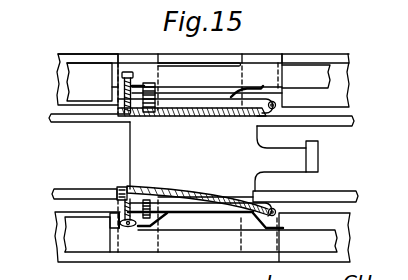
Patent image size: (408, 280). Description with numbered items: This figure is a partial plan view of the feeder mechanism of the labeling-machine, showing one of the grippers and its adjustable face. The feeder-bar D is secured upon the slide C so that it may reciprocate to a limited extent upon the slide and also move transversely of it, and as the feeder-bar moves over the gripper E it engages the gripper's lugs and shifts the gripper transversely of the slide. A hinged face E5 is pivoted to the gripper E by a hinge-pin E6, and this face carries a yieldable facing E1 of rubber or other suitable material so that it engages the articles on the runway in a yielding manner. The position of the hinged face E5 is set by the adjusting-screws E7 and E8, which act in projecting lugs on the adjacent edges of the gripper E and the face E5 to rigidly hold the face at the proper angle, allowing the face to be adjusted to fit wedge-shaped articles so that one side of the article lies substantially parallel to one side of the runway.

The slide C is at (61, 228).
The feeder-bar D is at (87, 234).
The gripper E is at (118, 228).
The yieldable facing E1 is at (124, 188).
The hinged face E5 is at (249, 205).
The hinge-pin E6 is at (276, 213).
The adjusting-screw E7 is at (130, 226).
The adjusting-screw E8 is at (157, 209).